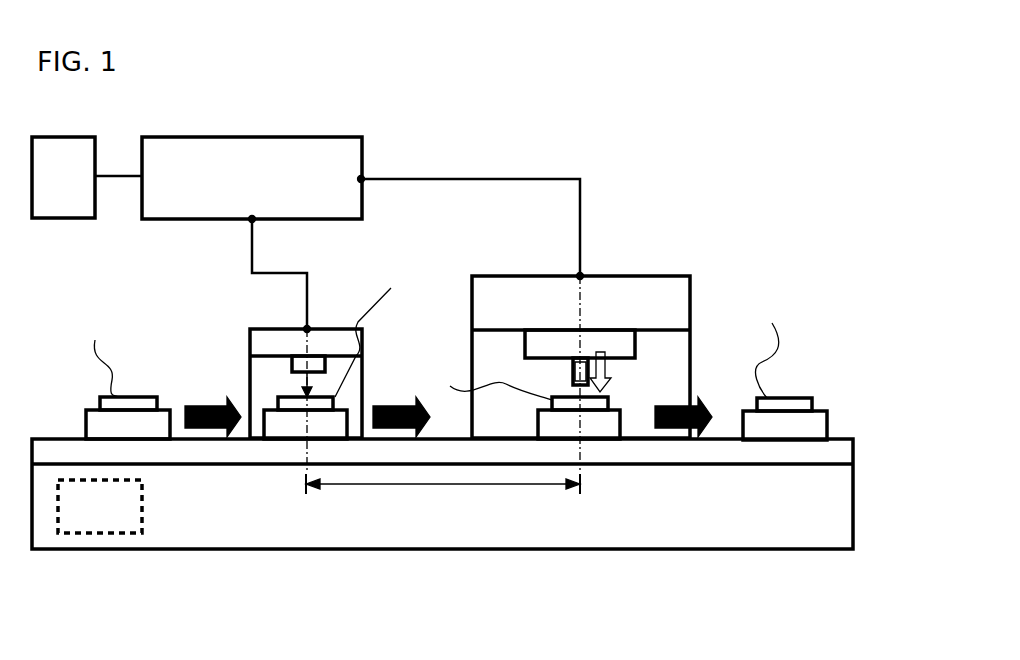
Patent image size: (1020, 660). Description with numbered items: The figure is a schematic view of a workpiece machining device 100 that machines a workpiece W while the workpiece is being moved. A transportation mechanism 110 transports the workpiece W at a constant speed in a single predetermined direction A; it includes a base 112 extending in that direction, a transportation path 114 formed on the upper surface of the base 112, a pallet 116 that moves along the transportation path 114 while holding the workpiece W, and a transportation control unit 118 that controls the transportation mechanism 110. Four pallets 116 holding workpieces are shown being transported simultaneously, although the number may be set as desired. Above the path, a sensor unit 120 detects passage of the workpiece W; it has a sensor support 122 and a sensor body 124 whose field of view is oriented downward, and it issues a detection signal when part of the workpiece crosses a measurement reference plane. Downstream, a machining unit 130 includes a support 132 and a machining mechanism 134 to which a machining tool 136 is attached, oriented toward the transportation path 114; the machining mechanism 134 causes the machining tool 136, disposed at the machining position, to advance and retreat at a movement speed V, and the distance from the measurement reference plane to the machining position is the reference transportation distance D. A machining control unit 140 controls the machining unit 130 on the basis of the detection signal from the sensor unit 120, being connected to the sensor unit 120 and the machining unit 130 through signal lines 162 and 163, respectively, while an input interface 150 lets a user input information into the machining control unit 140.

The workpiece machining device 100 is at (790, 188).
The transportation mechanism 110 is at (60, 400).
The base 112 is at (855, 510).
The transportation path 114 is at (843, 440).
The pallet 116 is at (170, 410).
The transportation control unit 118 is at (142, 508).
The sensor unit 120 is at (340, 283).
The sensor support 122 is at (264, 325).
The sensor body 124 is at (292, 370).
The machining unit 130 is at (606, 250).
The support 132 is at (548, 276).
The machining mechanism 134 is at (637, 336).
The machining tool 136 is at (571, 374).
The machining control unit 140 is at (362, 155).
The input interface 150 is at (75, 219).
The signal line 162 is at (252, 240).
The signal line 163 is at (500, 177).